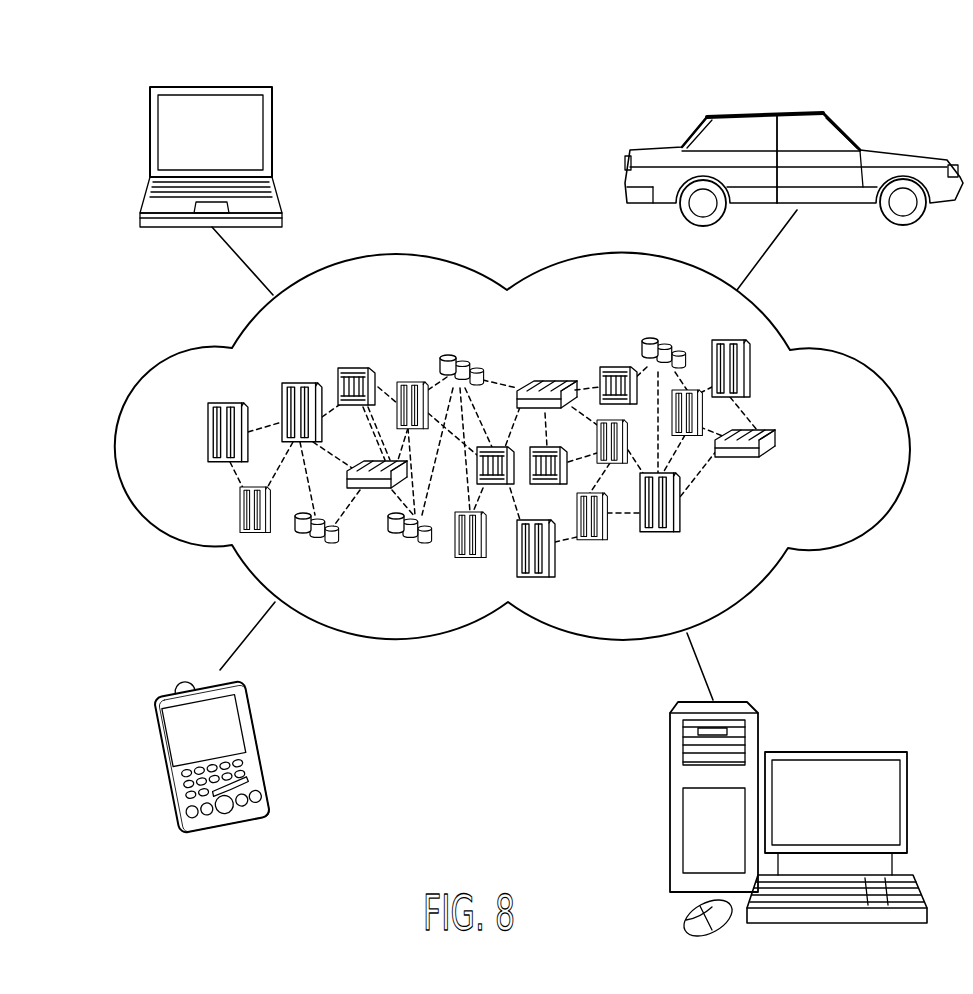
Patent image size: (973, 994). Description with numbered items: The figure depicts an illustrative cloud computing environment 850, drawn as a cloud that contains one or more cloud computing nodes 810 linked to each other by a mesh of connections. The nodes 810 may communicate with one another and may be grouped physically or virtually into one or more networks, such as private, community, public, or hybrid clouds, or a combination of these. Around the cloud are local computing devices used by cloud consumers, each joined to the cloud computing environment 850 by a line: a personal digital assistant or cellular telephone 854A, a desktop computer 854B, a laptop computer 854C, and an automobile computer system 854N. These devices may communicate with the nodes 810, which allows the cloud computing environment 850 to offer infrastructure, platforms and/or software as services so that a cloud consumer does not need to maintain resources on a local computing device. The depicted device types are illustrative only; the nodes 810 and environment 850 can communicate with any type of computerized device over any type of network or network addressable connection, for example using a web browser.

The cloud computing environment 850 is at (850, 353).
The cloud computing nodes 810 is at (785, 447).
The personal digital assistant or cellular telephone 854A is at (190, 683).
The desktop computer 854B is at (835, 750).
The laptop computer 854C is at (210, 87).
The automobile computer system 854N is at (773, 127).